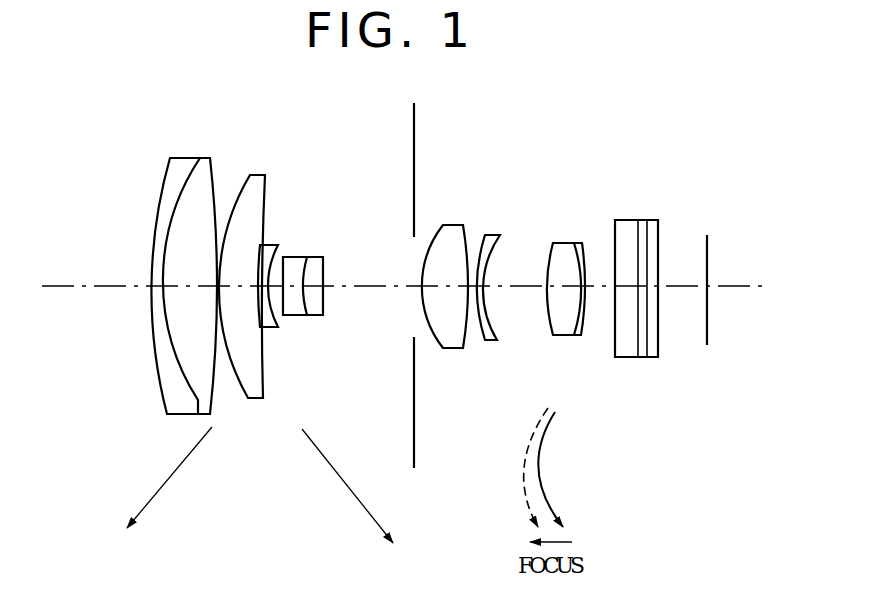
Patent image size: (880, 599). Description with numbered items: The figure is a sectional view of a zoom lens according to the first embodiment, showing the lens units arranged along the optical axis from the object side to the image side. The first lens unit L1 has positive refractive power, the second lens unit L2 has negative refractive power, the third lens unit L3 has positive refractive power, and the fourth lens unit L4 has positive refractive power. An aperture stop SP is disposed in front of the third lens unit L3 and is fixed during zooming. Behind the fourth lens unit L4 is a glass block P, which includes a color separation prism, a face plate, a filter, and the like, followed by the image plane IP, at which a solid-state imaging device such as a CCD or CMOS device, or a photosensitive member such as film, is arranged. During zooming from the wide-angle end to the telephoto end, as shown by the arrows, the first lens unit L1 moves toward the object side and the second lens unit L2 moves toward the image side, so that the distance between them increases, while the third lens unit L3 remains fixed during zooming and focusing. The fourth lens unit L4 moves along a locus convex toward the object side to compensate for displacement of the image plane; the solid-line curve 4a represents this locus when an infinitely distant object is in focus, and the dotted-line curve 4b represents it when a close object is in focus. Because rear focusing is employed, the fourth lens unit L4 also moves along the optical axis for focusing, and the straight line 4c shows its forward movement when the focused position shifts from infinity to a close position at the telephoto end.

The first lens unit L1 is at (270, 150).
The second lens unit L2 is at (331, 237).
The third lens unit L3 is at (505, 215).
The fourth lens unit L4 is at (591, 215).
The aperture stop SP is at (414, 116).
The glass block P is at (673, 212).
The image plane IP is at (707, 247).
The solid-line curve 4a is at (537, 481).
The dotted-line curve 4b is at (523, 483).
The straight line 4c is at (555, 541).